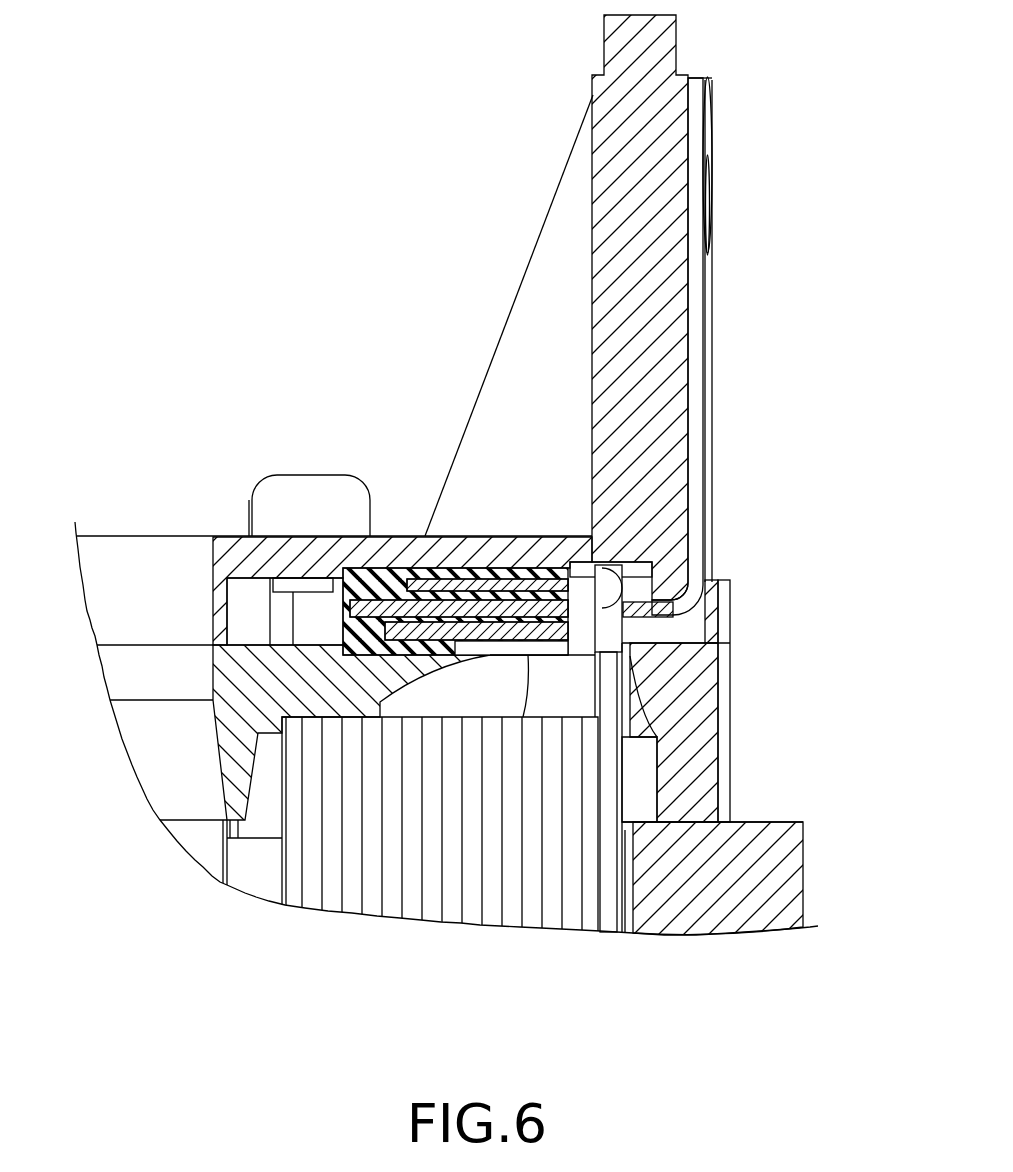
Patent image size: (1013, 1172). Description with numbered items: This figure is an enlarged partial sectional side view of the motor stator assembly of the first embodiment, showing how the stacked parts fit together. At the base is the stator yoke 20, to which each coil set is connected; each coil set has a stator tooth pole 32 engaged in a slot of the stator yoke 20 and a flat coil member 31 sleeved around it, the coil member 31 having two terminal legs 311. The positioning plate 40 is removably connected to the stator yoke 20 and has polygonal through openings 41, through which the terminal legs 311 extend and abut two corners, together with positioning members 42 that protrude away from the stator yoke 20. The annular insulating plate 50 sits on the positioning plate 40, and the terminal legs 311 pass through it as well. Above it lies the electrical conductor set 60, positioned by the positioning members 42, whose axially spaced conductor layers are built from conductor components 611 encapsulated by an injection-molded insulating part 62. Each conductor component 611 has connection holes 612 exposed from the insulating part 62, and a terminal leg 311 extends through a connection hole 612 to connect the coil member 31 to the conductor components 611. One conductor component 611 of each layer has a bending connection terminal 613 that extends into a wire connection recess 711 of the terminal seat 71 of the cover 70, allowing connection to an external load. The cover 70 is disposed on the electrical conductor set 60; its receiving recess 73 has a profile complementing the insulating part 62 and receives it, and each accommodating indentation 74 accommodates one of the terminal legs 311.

The stator yoke 20 is at (754, 806).
The coil member 31 is at (333, 904).
The stator tooth pole 32 is at (253, 870).
The terminal legs 311 is at (617, 590).
The positioning plate 40 is at (736, 653).
The through openings 41 is at (650, 768).
The positioning members 42 is at (270, 482).
The insulating plate 50 is at (497, 666).
The electrical conductor set 60 is at (352, 558).
The conductor components 611 is at (434, 557).
The connection holes 612 is at (617, 563).
The connection terminal 613 is at (707, 388).
The insulating part 62 is at (515, 552).
The cover 70 is at (555, 282).
The terminal seat 71 is at (702, 266).
The wire connection recesses 711 is at (690, 310).
The receiving recess 73 is at (330, 578).
The accommodating indentations 74 is at (583, 565).